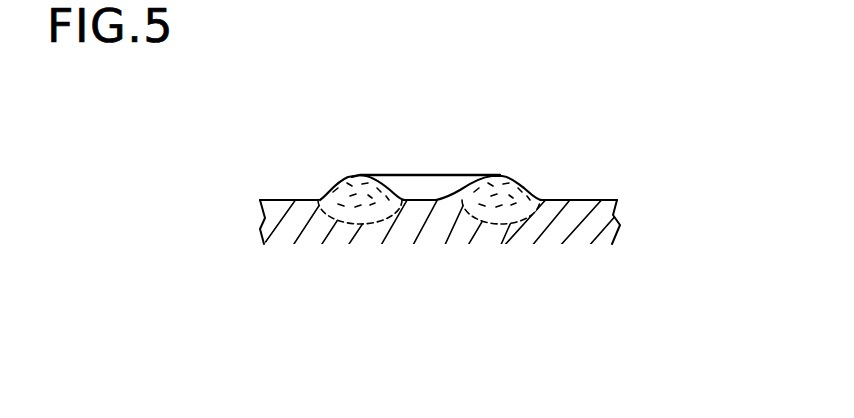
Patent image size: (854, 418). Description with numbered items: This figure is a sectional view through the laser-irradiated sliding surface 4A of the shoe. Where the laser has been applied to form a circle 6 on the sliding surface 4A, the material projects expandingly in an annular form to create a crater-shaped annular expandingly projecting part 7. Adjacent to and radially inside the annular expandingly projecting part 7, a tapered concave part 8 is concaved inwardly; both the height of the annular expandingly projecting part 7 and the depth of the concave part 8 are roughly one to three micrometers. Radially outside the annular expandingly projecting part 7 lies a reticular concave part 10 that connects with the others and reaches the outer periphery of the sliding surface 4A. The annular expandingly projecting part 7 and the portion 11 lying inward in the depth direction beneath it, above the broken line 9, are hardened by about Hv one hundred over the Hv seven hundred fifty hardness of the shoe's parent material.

The sliding surface 4A is at (597, 185).
The reticular concave part 10 is at (302, 200).
The annular expandingly projecting part 7 is at (340, 193).
The circle 6 is at (360, 175).
The tapered concave part 8 is at (447, 200).
The broken line 9 is at (352, 225).
The portion on the inside in the depth direction 11 is at (370, 210).